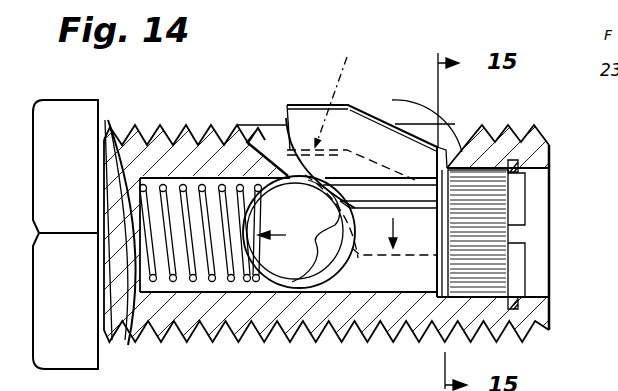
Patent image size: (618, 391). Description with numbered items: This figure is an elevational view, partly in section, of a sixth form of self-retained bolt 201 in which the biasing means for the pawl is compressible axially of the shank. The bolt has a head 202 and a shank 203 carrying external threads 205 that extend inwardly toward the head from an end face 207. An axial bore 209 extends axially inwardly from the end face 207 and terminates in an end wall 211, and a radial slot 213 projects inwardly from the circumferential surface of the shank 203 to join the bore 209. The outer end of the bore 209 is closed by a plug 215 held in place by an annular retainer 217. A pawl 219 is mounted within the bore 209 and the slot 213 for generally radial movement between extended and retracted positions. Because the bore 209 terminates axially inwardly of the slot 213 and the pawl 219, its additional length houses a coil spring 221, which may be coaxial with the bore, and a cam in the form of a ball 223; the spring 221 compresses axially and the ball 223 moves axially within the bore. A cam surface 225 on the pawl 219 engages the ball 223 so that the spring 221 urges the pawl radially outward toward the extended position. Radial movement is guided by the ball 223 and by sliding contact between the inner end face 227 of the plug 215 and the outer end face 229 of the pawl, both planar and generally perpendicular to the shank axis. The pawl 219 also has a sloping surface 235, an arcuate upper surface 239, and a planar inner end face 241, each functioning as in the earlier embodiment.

The self-retained bolt 201 is at (86, 256).
The head 202 is at (55, 130).
The shank 203 is at (118, 304).
The external threads 205 is at (518, 325).
The end face 207 is at (552, 155).
The axial bore 209 is at (350, 290).
The end wall 211 is at (158, 126).
The radial slot 213 is at (266, 148).
The plug 215 is at (500, 185).
The annular retainer 217 is at (515, 300).
The pawl 219 is at (372, 109).
The coil spring 221 is at (190, 274).
The ball 223 is at (214, 205).
The cam surface 225 is at (275, 134).
The inner end face 227 is at (430, 292).
The outer end face 229 is at (450, 168).
The sloping surface 235 is at (421, 105).
The arcuate upper surface 239 is at (315, 110).
The planar inner end face 241 is at (285, 133).